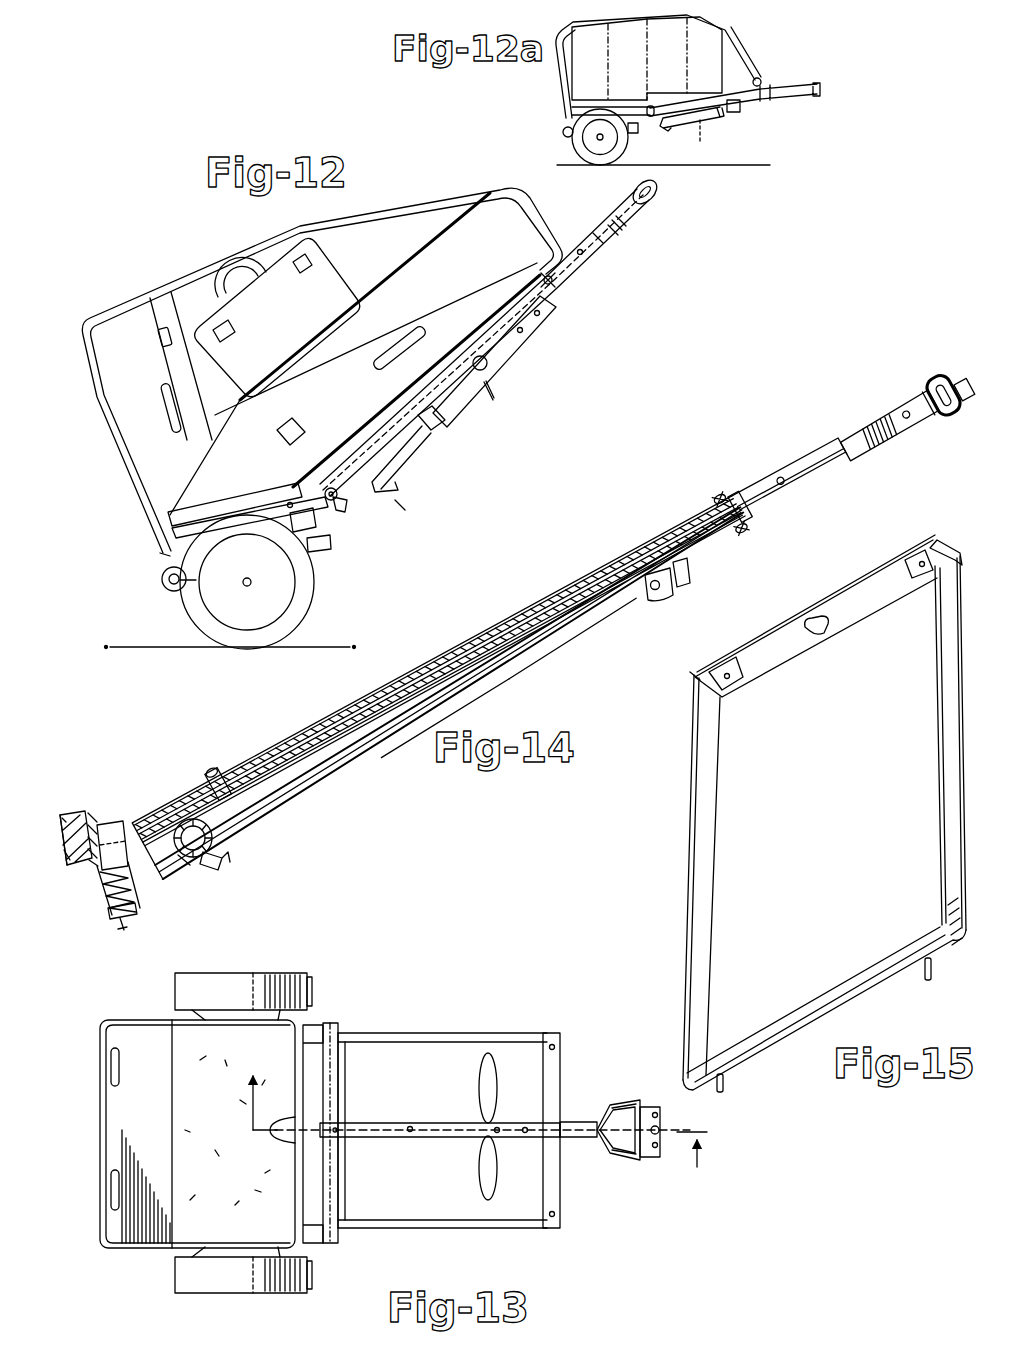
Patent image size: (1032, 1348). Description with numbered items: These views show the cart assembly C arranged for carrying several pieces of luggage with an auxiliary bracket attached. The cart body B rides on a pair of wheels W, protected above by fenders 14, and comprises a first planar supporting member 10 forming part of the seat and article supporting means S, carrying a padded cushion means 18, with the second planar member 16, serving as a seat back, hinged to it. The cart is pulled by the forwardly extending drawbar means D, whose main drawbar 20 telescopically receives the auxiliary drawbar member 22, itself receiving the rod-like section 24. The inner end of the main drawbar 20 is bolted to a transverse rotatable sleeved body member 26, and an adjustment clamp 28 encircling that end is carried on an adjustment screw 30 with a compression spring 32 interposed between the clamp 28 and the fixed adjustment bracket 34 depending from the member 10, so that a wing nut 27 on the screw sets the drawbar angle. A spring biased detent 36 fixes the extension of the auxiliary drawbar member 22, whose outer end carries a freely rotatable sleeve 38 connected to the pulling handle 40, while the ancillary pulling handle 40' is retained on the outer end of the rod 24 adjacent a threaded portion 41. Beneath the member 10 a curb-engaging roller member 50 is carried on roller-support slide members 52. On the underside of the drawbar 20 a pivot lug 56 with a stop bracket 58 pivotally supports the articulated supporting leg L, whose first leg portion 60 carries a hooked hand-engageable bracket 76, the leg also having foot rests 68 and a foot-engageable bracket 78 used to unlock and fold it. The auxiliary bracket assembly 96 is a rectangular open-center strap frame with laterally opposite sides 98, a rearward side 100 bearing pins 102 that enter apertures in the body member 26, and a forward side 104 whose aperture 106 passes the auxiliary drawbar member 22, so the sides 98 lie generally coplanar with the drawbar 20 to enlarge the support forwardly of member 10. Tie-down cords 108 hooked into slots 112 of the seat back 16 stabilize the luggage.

In FIG. 12, the first generally rectangular planar supporting member 10 is at (174, 534).
In FIG. 14, the first generally rectangular planar supporting member 10 is at (75, 862).
In FIG. 12, the fenders 14 is at (178, 592).
In FIG. 13, the fenders 14 is at (260, 972).
In FIG. 12, the second generally rectangular planar member 16 is at (127, 460).
In FIG. 13, the second generally rectangular planar member 16 is at (147, 1134).
In FIG. 12, the padded cushion means 18 is at (199, 511).
In FIG. 14, the padded cushion means 18 is at (78, 808).
In FIG. 13, the padded cushion means 18 is at (227, 1130).
In FIG. 14, the main drawbar 20 is at (413, 670).
In FIG. 13, the main drawbar 20 is at (358, 1122).
In FIG. 14, the auxiliary drawbar member 22 is at (467, 652).
In FIG. 13, the rod-like section 24 is at (610, 1153).
In FIG. 12, the transverse rotatable sleeved body member 26 is at (346, 505).
In FIG. 14, the transverse rotatable sleeved body member 26 is at (216, 850).
In FIG. 13, the transverse rotatable sleeved body member 26 is at (338, 1024).
In FIG. 14, the wing nut 27 is at (222, 871).
In FIG. 14, the adjustment clamp 28 is at (118, 812).
In FIG. 14, the adjustment screw 30 is at (123, 927).
In FIG. 14, the compression spring 32 is at (107, 888).
In FIG. 14, the adjustment bracket 34 is at (140, 900).
In FIG. 14, the spring biased detent 36 is at (222, 768).
In FIG. 12, the freely rotatable sleeve 38 is at (577, 238).
In FIG. 14, the freely rotatable sleeve 38 is at (768, 471).
In FIG. 13, the freely rotatable sleeve 38 is at (573, 1123).
In FIG. 12, the pulling handle 40 is at (609, 202).
In FIG. 14, the pulling handle 40 is at (889, 424).
In FIG. 13, the pulling handle 40 is at (626, 1103).
In FIG. 12, the ancillary pulling handle 40' is at (674, 193).
In FIG. 14, the ancillary pulling handle 40' is at (950, 376).
In FIG. 13, the ancillary pulling handle 40' is at (633, 1157).
In FIG. 14, the threaded section 41 is at (903, 408).
In FIG. 12, the step- or curb-engaging roller member 50 is at (160, 582).
In FIG. 12, the roller-support slide members 52 is at (330, 548).
In FIG. 14, the pivot-enabling bracket or lug 56 is at (670, 592).
In FIG. 14, the stop bracket 58 is at (689, 575).
In FIG. 14, the first leg portion 60 is at (655, 597).
In FIG. 13, the foot rests 68 is at (478, 1071).
In FIG. 12, the hand-engageable bracket 76 is at (492, 397).
In FIG. 12, the foot-engageable bracket 78 is at (400, 487).
In FIG. 14, the auxiliary bracket assembly 96 is at (384, 745).
In FIG. 15, the auxiliary bracket assembly 96 is at (694, 867).
In FIG. 13, the auxiliary bracket assembly 96 is at (496, 1032).
In FIG. 12, the laterally opposite sides 98 is at (430, 424).
In FIG. 14, the laterally opposite sides 98 is at (513, 653).
In FIG. 15, the laterally opposite sides 98 is at (938, 713).
In FIG. 13, the laterally opposite sides 98 is at (417, 1033).
In FIG. 14, the rearward side 100 is at (228, 829).
In FIG. 15, the rearward side 100 is at (803, 1008).
In FIG. 13, the rearward side 100 is at (348, 1170).
In FIG. 14, the pins 102 is at (183, 860).
In FIG. 15, the pins 102 is at (933, 978).
In FIG. 14, the forward side 104 is at (746, 521).
In FIG. 15, the forward side 104 is at (867, 575).
In FIG. 13, the forward side 104 is at (553, 1060).
In FIG. 12, the aperture 106 is at (548, 280).
In FIG. 14, the aperture 106 is at (726, 496).
In FIG. 15, the aperture 106 is at (822, 633).
In FIG. 12A, the tie-down cords 108 is at (733, 56).
In FIG. 12, the tie-down cords 108 is at (385, 212).
In FIG. 13, the slots 112 is at (109, 1060).
In FIG. 12A, the seat and/or article supporting means S is at (556, 79).
In FIG. 12, the seat and/or article supporting means S is at (170, 540).
In FIG. 13, the seat and/or article supporting means S is at (193, 1040).
In FIG. 12A, the wheels W is at (572, 144).
In FIG. 12, the wheels W is at (315, 585).
In FIG. 13, the wheels W is at (312, 988).
In FIG. 12A, the drawbar means D is at (738, 84).
In FIG. 12, the drawbar means D is at (443, 360).
In FIG. 14, the drawbar means D is at (504, 616).
In FIG. 13, the drawbar means D is at (426, 1122).
In FIG. 12A, the articulated supporting leg L is at (692, 131).
In FIG. 12, the articulated supporting leg L is at (521, 343).
In FIG. 12, the cart body B is at (318, 526).
In FIG. 12, the cart assembly C is at (402, 505).